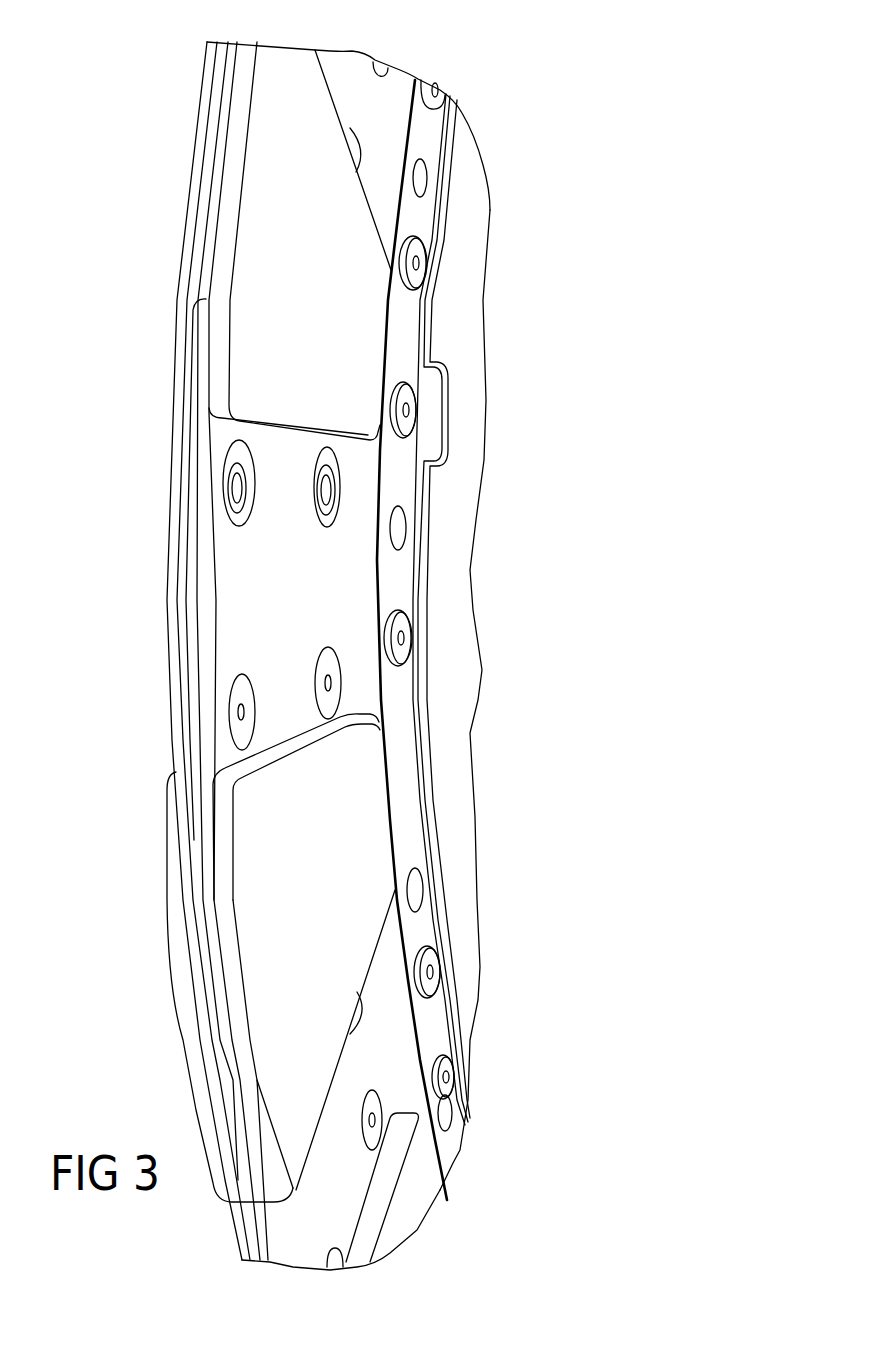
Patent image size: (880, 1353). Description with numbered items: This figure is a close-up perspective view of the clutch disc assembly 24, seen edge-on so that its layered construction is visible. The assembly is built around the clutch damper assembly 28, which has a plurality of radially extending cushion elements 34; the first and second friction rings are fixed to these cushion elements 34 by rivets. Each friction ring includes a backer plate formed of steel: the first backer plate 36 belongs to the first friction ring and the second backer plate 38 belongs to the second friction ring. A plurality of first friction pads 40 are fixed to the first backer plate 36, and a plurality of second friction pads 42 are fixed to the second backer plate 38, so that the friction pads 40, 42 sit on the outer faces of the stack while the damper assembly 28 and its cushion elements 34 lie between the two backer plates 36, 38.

The clutch disc assembly 24 is at (403, 62).
The clutch damper assembly 28 is at (463, 340).
The cushion element 34 is at (258, 1260).
The first backer plate 36 is at (232, 1228).
The second backer plate 38 is at (270, 1262).
The first friction pad 40 is at (197, 1135).
The second friction pad 42 is at (310, 1168).